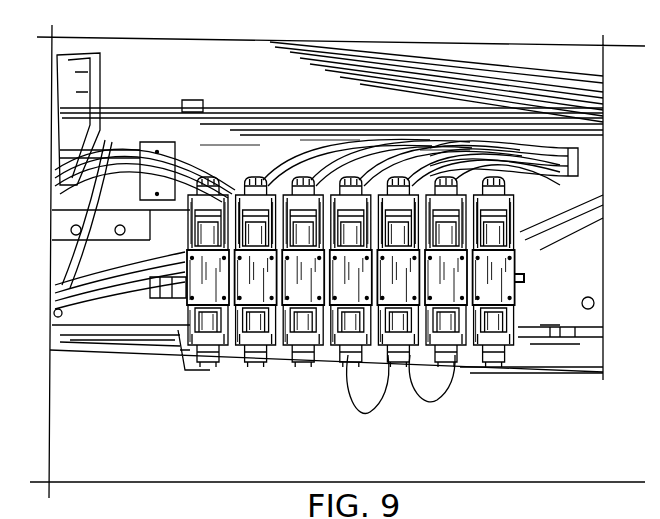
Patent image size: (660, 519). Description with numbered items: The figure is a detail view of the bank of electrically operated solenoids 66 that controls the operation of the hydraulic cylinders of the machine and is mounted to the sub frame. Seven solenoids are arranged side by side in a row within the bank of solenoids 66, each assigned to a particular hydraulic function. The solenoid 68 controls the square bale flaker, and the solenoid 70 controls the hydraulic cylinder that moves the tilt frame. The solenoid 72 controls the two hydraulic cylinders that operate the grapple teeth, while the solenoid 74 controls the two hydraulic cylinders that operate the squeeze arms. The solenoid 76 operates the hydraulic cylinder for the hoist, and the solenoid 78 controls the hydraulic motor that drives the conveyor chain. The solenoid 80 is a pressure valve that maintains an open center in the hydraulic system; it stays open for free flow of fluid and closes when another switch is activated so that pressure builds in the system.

The bank of electrically operated solenoids 66 is at (168, 378).
The solenoid 68 is at (213, 352).
The solenoid 70 is at (261, 352).
The solenoid 72 is at (306, 350).
The solenoid 74 is at (346, 352).
The solenoid 76 is at (400, 352).
The solenoid 78 is at (458, 352).
The solenoid 80 is at (495, 352).